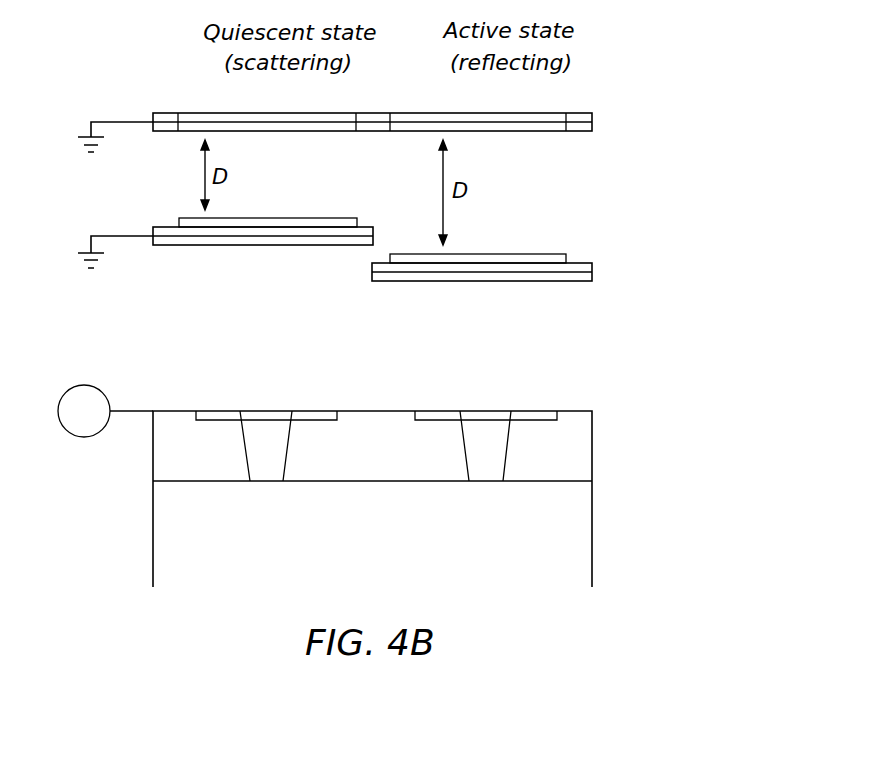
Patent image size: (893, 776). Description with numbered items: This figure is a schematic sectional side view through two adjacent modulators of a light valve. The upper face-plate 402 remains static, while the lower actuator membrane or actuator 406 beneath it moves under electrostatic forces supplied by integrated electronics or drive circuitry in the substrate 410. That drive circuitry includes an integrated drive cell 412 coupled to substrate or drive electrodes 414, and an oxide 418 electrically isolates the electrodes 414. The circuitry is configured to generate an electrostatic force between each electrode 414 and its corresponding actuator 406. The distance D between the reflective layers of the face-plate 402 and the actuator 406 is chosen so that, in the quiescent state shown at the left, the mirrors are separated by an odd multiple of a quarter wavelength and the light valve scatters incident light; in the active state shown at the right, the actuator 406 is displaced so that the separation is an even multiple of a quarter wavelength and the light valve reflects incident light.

The face-plate 402 is at (160, 112).
The actuator 406 is at (271, 217).
The substrate 410 is at (410, 473).
The integrated drive cell 412 is at (408, 511).
The drive electrode 414 is at (537, 410).
The oxide 418 is at (372, 499).